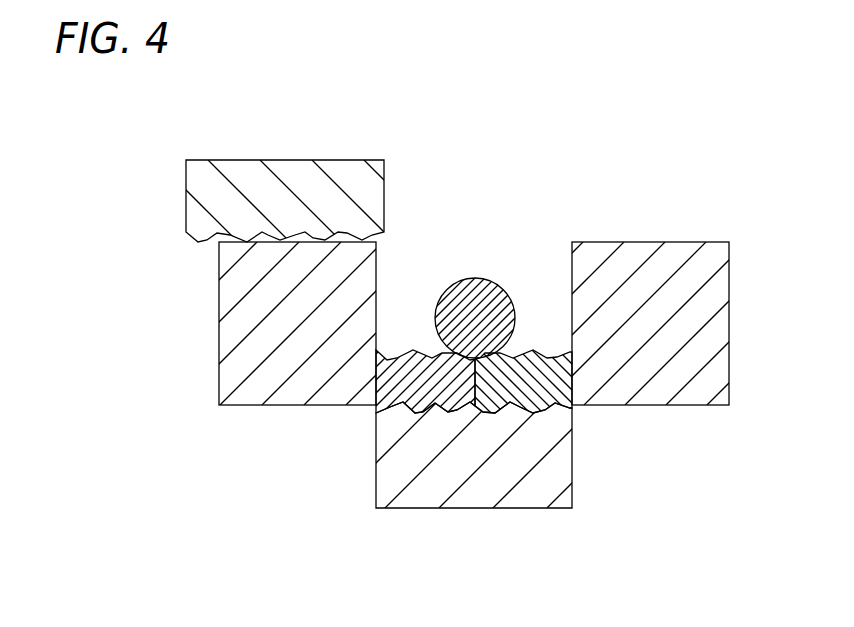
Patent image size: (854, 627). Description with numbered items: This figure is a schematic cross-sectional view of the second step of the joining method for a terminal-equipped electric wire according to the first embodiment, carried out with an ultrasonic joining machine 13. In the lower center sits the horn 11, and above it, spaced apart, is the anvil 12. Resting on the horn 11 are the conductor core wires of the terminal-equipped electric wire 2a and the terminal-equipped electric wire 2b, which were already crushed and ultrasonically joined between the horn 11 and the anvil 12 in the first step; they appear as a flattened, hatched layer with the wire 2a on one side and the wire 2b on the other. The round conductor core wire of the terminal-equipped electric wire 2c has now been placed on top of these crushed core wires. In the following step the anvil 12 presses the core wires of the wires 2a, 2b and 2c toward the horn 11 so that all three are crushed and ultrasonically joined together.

The horn 11 is at (468, 496).
The anvil 12 is at (300, 178).
The ultrasonic joining machine 13 is at (283, 395).
The terminal-equipped electric wire 2a is at (399, 380).
The terminal-equipped electric wire 2b is at (547, 386).
The terminal-equipped electric wire 2c is at (468, 292).